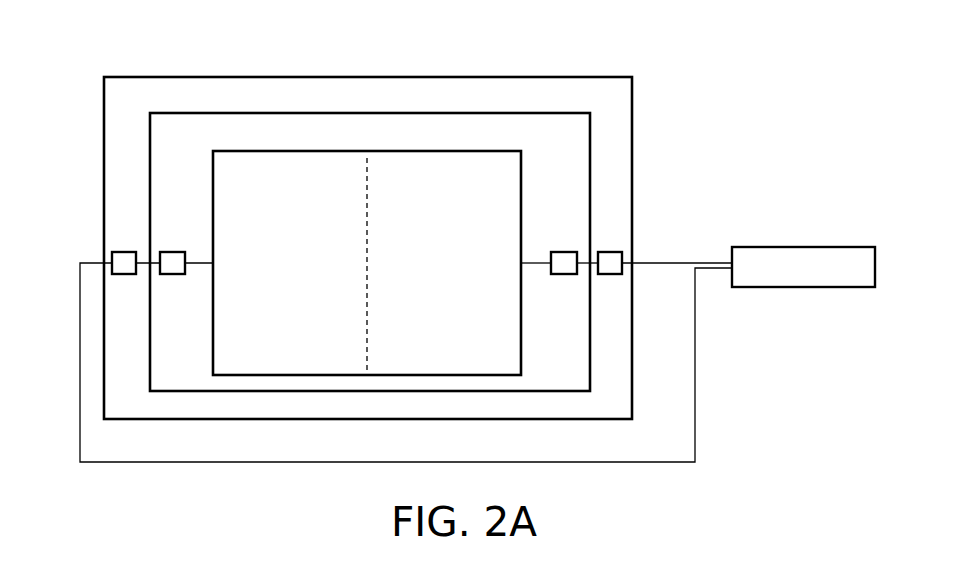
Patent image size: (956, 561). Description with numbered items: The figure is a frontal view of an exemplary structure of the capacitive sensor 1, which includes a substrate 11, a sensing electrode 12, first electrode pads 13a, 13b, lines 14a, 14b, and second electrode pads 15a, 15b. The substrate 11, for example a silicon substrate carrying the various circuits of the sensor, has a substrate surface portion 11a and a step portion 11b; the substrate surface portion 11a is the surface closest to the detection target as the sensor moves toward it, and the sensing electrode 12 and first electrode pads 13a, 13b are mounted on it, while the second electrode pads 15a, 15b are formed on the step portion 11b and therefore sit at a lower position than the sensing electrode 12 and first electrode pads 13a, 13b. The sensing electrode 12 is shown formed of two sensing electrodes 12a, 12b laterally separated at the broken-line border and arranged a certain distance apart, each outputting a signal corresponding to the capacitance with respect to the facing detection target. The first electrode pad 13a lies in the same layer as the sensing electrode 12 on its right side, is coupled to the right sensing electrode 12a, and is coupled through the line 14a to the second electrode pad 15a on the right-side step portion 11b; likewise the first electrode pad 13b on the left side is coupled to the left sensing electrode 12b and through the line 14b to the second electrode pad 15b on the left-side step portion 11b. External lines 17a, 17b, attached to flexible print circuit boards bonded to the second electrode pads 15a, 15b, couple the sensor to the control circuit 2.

The capacitive sensor 1 is at (606, 56).
The control circuit 2 is at (800, 247).
The substrate 11 is at (221, 74).
The substrate surface portion 11a is at (591, 142).
The step portion 11b is at (633, 107).
The sensing electrode 12 is at (384, 140).
The right sensing electrode 12a is at (460, 151).
The left sensing electrode 12b is at (295, 151).
The first electrode pad 13a is at (564, 252).
The first electrode pad 13b is at (173, 252).
The line 14a is at (586, 265).
The line 14b is at (147, 264).
The second electrode pad 15a is at (610, 252).
The second electrode pad 15b is at (124, 252).
The external line 17a is at (718, 262).
The external line 17b is at (695, 362).